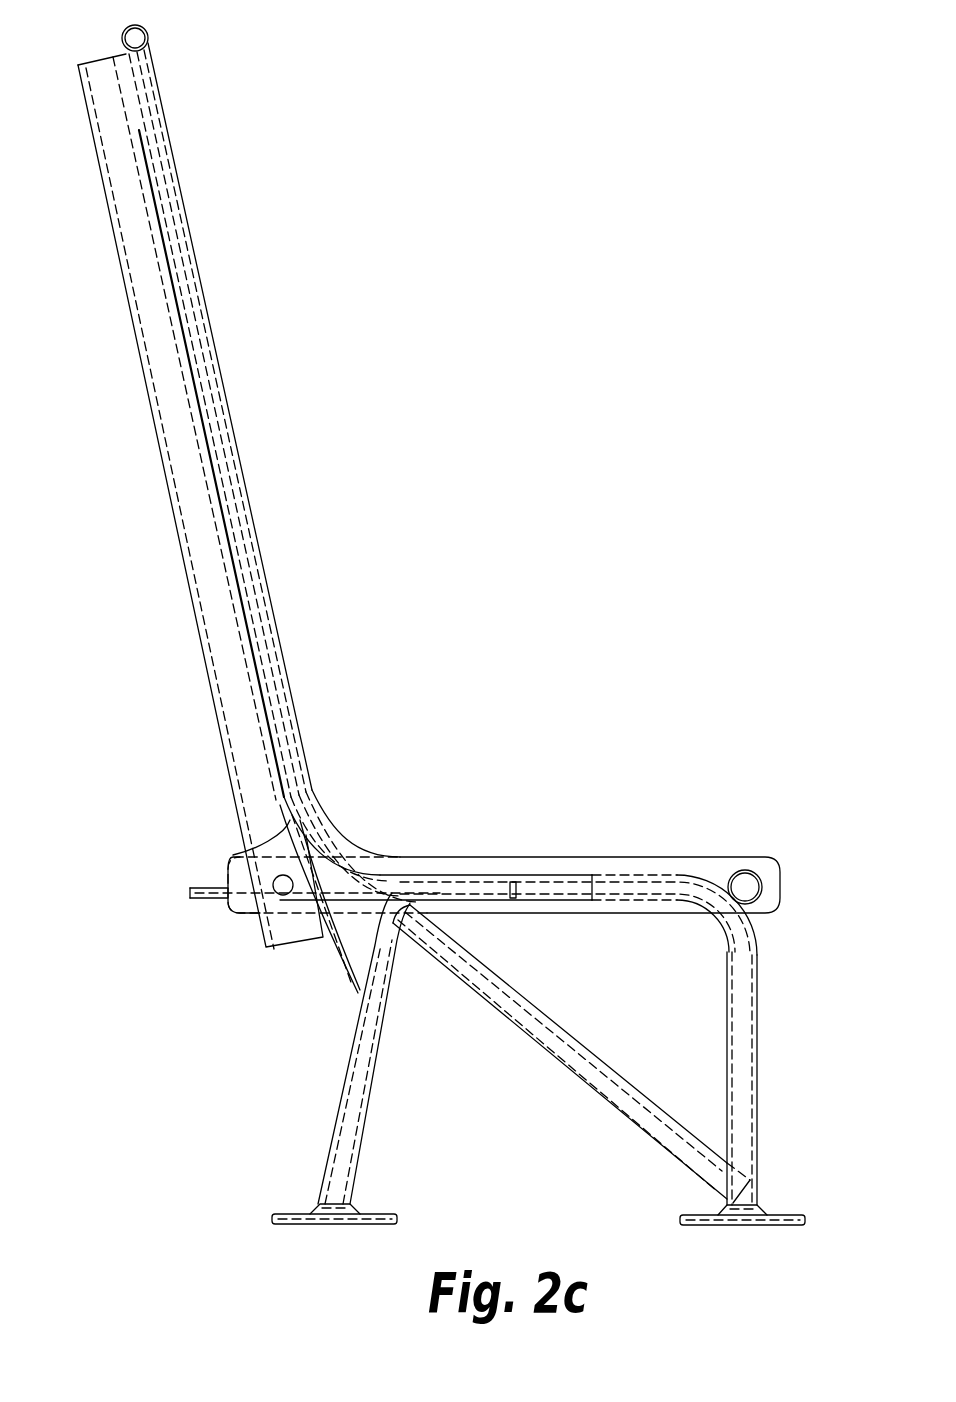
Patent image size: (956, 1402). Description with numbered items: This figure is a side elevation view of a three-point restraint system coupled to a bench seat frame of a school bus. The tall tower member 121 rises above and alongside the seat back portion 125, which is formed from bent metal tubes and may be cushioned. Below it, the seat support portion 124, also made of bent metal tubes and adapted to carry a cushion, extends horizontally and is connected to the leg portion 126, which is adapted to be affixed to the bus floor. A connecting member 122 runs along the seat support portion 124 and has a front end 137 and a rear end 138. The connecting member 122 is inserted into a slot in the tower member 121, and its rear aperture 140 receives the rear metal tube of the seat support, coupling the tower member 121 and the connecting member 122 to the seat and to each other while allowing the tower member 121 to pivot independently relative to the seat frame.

The tower member 121 is at (200, 521).
The seat back portion 125 is at (240, 492).
The connecting member 122 is at (555, 862).
The seat support portion 124 is at (652, 885).
The leg portion 126 is at (750, 1050).
The front end 137 is at (770, 886).
The rear end 138 is at (237, 868).
The rear aperture 140 is at (246, 913).